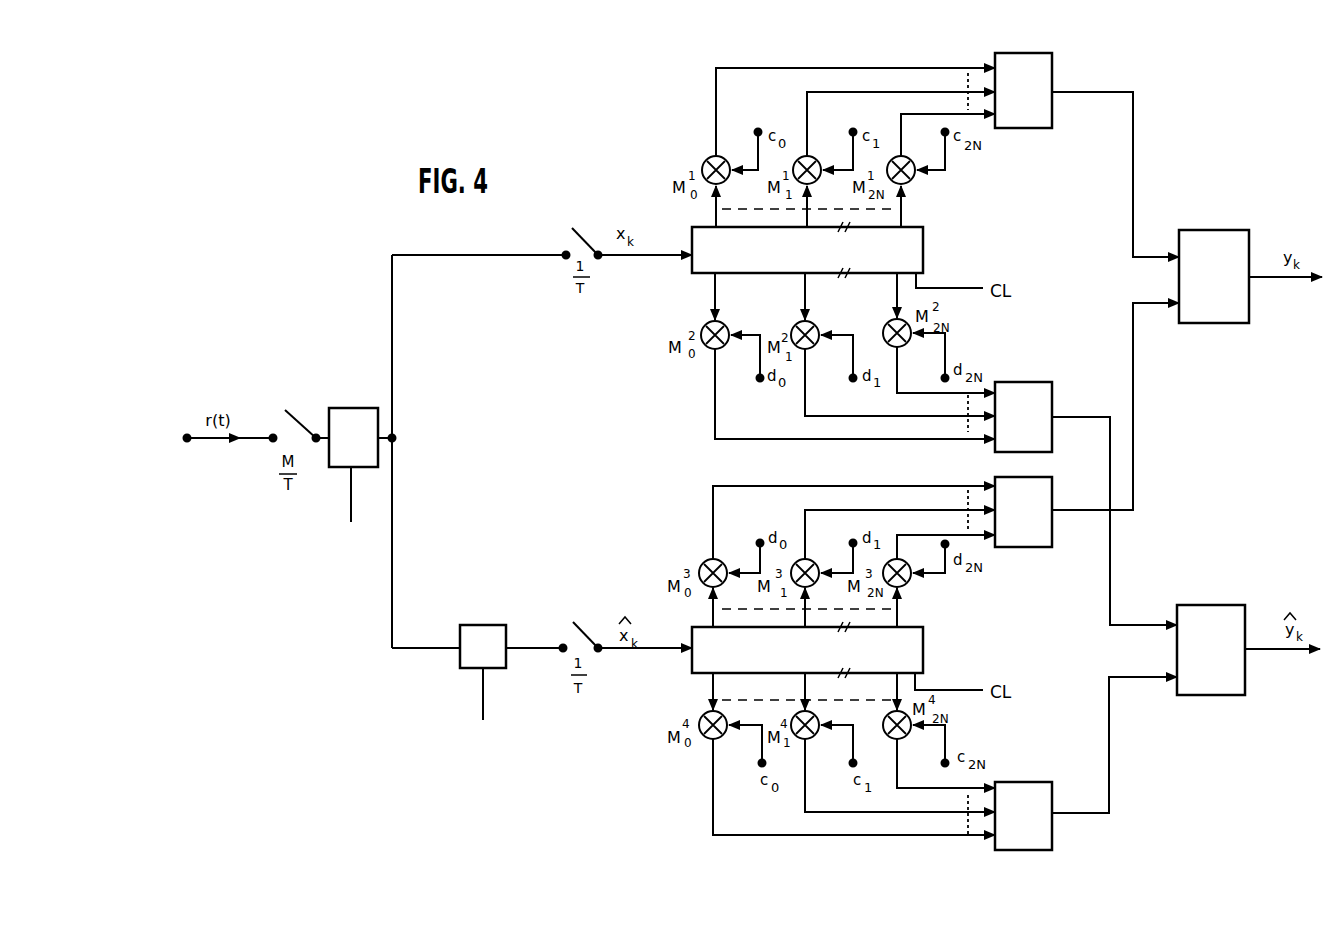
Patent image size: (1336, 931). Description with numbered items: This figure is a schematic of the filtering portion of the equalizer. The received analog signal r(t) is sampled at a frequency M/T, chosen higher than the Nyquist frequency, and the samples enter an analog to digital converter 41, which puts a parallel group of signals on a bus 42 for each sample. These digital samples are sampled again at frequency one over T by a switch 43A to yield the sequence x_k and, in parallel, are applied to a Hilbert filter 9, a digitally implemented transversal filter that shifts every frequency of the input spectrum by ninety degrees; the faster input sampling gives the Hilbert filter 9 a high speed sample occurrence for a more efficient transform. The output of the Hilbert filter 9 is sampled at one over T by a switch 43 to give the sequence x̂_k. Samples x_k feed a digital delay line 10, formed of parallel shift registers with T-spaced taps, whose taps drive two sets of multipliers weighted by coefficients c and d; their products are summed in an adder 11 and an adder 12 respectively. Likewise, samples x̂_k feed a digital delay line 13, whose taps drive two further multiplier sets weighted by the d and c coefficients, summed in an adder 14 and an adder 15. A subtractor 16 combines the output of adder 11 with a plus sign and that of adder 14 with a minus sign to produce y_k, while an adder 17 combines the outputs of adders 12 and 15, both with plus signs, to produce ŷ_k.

The Hilbert filter 9 is at (501, 634).
The digital delay line 10 is at (923, 244).
The adder 11 is at (1052, 66).
The adder 12 is at (1052, 398).
The digital delay line 13 is at (923, 650).
The adder 14 is at (1052, 492).
The adder 15 is at (1052, 797).
The subtractor 16 is at (1221, 232).
The adder 17 is at (1219, 607).
The analog to digital converter 41 is at (343, 408).
The bus 42 is at (392, 518).
The switch 43 is at (586, 622).
The switch 43A is at (591, 230).